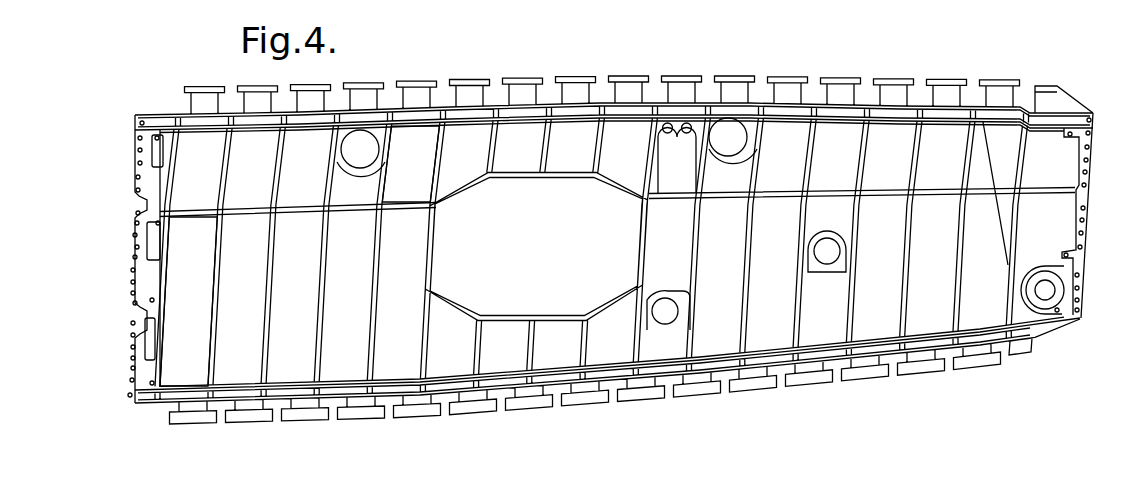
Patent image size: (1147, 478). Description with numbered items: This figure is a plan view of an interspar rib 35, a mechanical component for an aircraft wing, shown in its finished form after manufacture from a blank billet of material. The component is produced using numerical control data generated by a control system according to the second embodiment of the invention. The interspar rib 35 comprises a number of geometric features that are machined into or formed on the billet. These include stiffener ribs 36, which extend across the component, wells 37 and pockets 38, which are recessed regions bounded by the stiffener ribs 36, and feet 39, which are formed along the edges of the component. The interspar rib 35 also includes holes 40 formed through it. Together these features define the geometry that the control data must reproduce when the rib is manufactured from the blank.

The interspar rib 35 is at (961, 71).
The stiffener ribs 36 is at (320, 355).
The wells 37 is at (412, 138).
The pockets 38 is at (185, 375).
The feet 39 is at (742, 396).
The holes 40 is at (1085, 163).